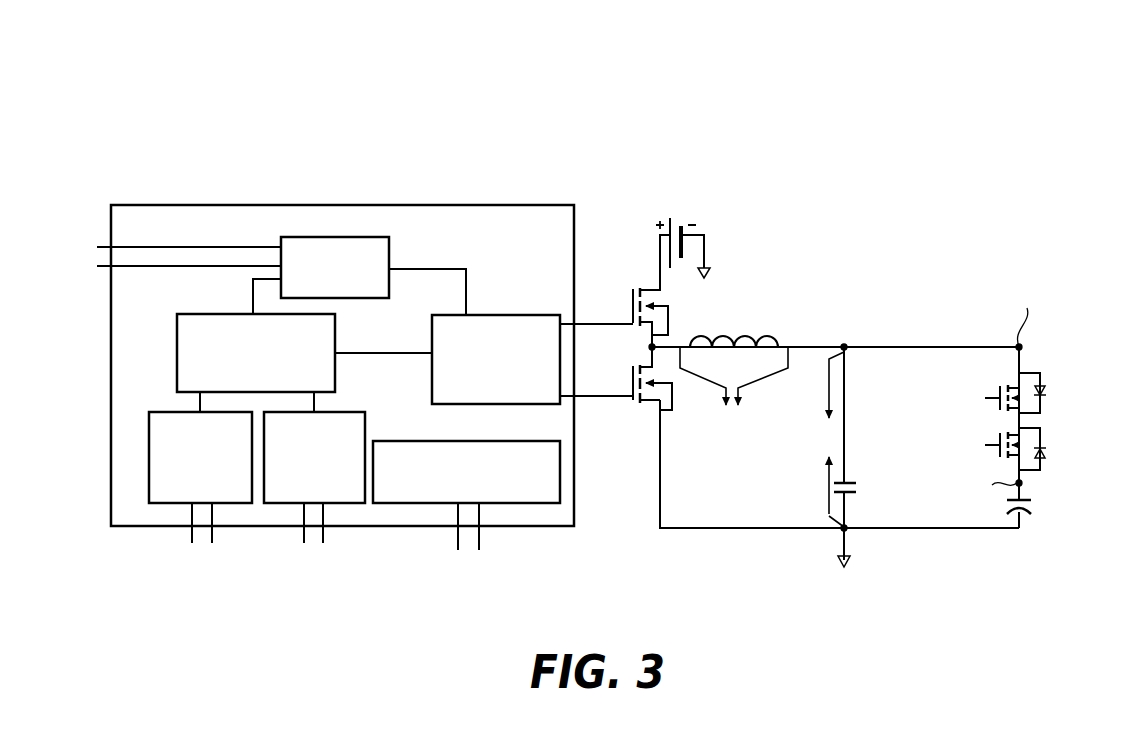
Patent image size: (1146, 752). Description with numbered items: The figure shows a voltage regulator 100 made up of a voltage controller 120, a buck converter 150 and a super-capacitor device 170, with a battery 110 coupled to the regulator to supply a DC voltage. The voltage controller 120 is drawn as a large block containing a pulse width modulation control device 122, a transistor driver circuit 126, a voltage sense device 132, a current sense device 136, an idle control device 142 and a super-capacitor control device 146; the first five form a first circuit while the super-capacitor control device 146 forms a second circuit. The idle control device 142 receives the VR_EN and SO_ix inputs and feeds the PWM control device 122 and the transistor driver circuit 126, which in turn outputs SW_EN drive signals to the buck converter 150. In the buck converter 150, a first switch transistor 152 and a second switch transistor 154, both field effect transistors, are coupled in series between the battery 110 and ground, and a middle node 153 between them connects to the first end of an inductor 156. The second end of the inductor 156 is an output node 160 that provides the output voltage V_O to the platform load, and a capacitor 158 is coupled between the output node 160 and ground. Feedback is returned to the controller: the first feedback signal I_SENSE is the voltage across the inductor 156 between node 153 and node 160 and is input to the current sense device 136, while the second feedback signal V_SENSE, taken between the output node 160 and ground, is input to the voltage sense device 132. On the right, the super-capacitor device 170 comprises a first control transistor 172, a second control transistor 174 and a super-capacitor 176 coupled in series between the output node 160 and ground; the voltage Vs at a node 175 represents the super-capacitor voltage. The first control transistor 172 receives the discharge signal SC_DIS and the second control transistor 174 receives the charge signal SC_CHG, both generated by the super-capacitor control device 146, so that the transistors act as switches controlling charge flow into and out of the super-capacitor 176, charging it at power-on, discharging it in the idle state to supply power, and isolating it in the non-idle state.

The voltage regulator 100 is at (188, 105).
The battery 110 is at (697, 218).
The voltage controller 120 is at (165, 205).
The pulse width modulation (PWM) control device 122 is at (177, 370).
The transistor driver circuit 126 is at (546, 315).
The voltage sense device 132 is at (149, 470).
The current sense device 136 is at (365, 430).
The idle control device 142 is at (322, 237).
The super-capacitor control device 146 is at (560, 470).
The buck converter 150 is at (746, 262).
The first switch transistor 152 is at (673, 320).
The middle node 153 is at (648, 347).
The second switch transistor 154 is at (681, 412).
The inductor 156 is at (737, 336).
The capacitor 158 is at (856, 494).
The output node 160 is at (844, 346).
The super-capacitor device 170 is at (1062, 548).
The first control transistor 172 is at (1056, 391).
The second control transistor 174 is at (1056, 447).
The node 175 is at (1021, 483).
The super-capacitor 176 is at (1036, 506).